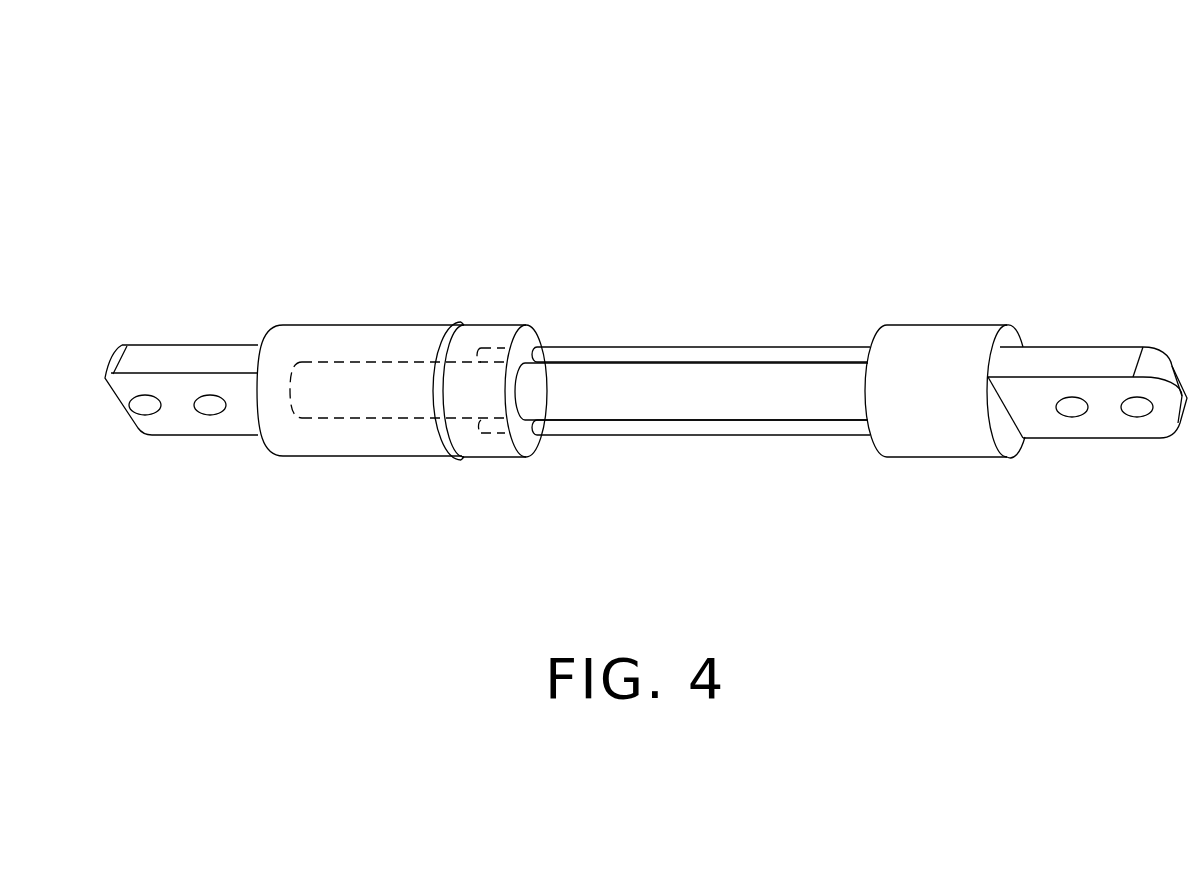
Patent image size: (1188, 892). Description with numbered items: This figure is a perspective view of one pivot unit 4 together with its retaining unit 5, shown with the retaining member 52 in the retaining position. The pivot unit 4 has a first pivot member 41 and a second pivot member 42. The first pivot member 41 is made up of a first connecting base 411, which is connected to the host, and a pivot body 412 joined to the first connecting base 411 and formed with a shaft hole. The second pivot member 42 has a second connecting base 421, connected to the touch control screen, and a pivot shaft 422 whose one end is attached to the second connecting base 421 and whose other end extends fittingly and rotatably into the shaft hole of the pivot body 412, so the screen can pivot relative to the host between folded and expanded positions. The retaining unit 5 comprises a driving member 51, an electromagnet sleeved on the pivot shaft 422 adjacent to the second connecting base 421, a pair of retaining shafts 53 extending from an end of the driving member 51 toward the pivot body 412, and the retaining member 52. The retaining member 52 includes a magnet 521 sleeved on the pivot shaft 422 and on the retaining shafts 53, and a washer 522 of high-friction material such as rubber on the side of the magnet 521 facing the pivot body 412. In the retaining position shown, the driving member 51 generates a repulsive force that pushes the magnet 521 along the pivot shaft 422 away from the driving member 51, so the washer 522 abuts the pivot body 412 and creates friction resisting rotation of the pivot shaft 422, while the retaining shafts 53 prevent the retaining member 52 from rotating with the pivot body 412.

The pivot unit 4 is at (725, 182).
The first pivot member 41 is at (298, 300).
The first connecting base 411 is at (167, 385).
The pivot body 412 is at (342, 348).
The second pivot member 42 is at (1087, 322).
The second connecting base 421 is at (1072, 425).
The pivot shaft 422 is at (612, 405).
The retaining unit 5 is at (812, 483).
The driving member 51 is at (932, 443).
The retaining member 52 is at (482, 467).
The magnet 521 is at (485, 338).
The washer 522 is at (447, 342).
The retaining shaft 53 is at (723, 352).